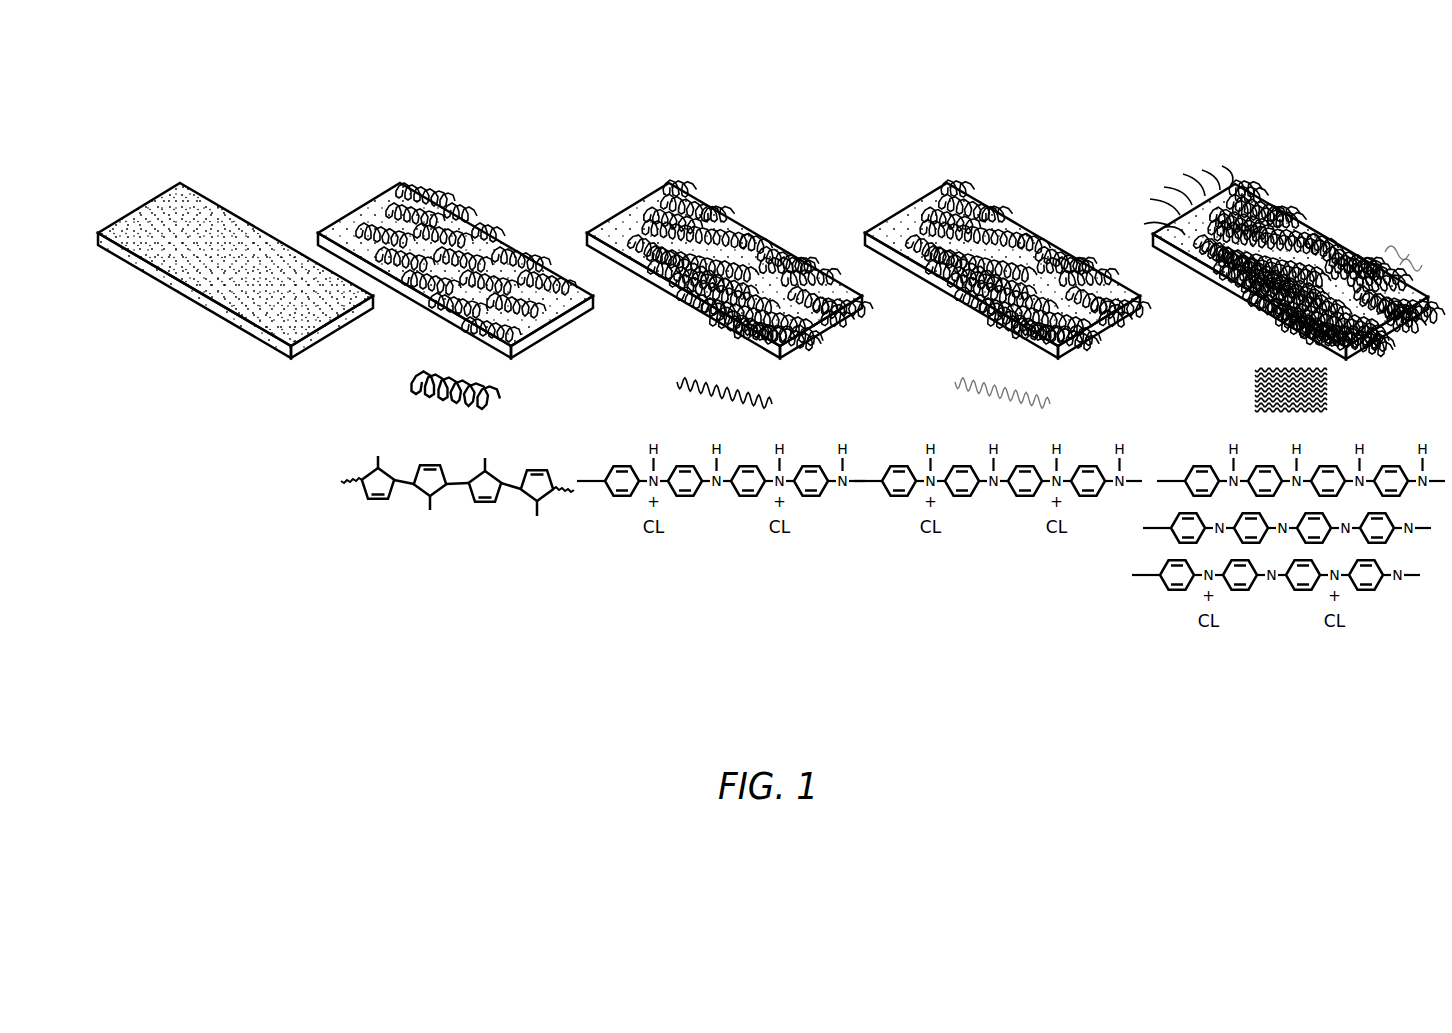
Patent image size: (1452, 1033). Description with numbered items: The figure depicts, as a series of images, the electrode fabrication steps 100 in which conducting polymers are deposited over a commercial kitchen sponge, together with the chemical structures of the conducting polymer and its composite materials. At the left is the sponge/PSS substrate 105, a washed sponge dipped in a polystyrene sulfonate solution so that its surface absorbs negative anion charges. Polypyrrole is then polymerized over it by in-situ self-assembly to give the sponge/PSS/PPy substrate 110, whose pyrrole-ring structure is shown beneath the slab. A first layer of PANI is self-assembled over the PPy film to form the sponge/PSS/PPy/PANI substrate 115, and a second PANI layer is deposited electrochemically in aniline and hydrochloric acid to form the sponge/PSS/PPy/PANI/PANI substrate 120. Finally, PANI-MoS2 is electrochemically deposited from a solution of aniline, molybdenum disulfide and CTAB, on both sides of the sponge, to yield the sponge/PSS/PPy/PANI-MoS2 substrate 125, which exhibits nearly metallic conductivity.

The electrode fabrication steps 100 is at (172, 104).
The sponge/PSS substrate 105 is at (220, 513).
The sponge/PSS/PPy substrate 110 is at (472, 714).
The sponge/PSS/PPy/PANI substrate 115 is at (739, 714).
The sponge/PSS/PPy/PANI/PANI substrate 120 is at (1014, 714).
The sponge/PSS/PPy/PANI-MoS2 substrate 125 is at (1319, 714).